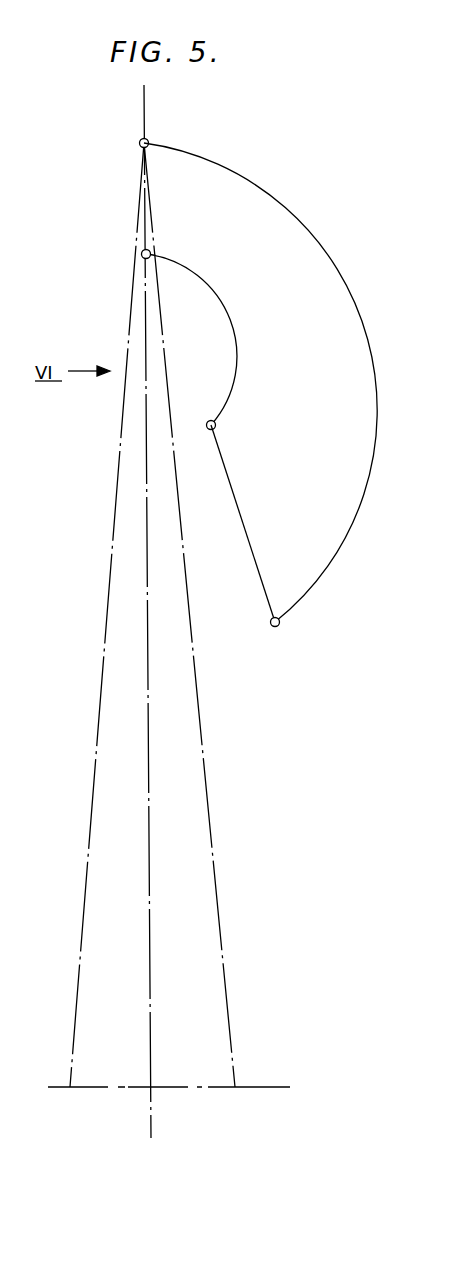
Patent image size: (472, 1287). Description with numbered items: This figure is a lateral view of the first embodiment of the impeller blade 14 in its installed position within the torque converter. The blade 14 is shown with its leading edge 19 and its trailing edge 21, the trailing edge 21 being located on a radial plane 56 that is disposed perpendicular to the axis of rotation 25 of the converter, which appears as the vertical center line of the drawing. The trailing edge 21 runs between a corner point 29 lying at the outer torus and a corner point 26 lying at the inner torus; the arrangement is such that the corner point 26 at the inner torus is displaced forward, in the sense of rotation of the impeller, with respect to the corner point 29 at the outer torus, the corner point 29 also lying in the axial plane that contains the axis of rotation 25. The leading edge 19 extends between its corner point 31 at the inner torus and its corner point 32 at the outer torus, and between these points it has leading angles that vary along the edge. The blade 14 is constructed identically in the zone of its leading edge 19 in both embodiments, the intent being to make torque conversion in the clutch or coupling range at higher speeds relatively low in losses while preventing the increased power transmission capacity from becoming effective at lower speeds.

The radial plane 56 is at (143, 117).
The trailing edge 21 is at (140, 203).
The corner point 29 is at (151, 138).
The blade 14 is at (323, 235).
The corner point 26 is at (139, 258).
The corner point 31 is at (216, 426).
The leading edge 19 is at (253, 564).
The corner point 32 is at (274, 628).
The axis of rotation 25 is at (270, 1087).